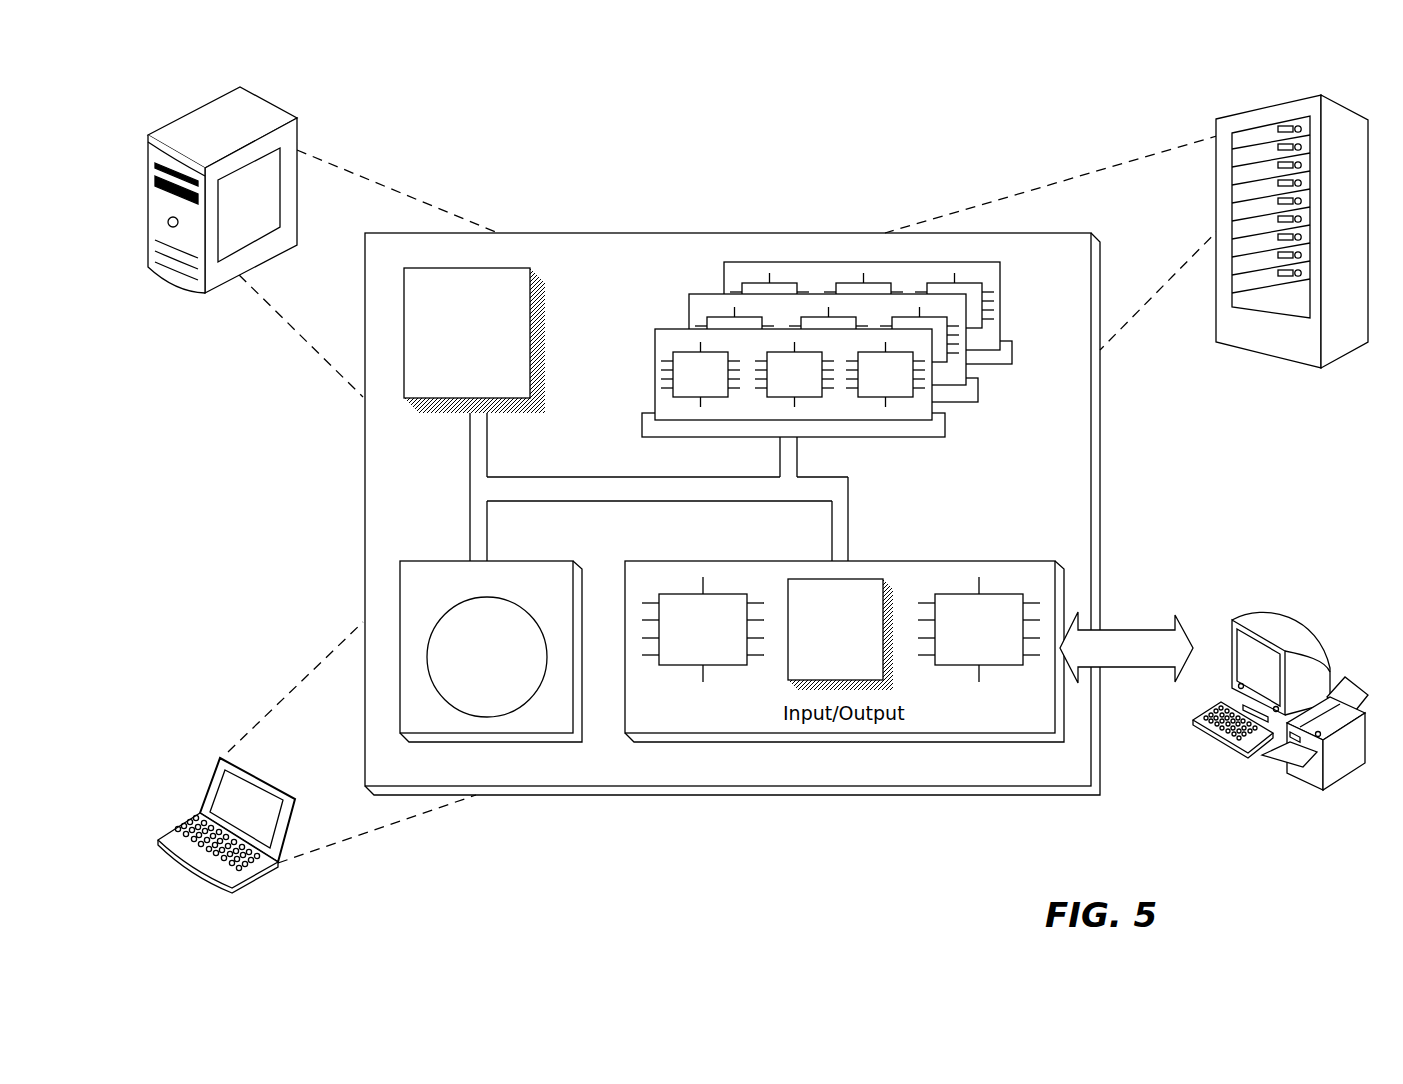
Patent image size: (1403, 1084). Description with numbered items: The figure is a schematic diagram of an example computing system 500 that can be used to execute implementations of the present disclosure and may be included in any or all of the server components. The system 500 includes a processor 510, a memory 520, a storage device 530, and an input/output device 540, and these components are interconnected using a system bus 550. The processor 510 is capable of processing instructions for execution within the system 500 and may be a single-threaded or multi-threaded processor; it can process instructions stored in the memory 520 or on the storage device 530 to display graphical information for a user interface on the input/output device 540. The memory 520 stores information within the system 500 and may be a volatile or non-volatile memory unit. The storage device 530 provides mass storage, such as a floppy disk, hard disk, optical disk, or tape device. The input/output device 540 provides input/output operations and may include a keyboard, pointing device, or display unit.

The computing system 500 is at (559, 153).
The processor 510 is at (521, 396).
The memory 520 is at (1010, 403).
The storage device 530 is at (563, 725).
The input/output device 540 is at (1232, 621).
The system bus 550 is at (655, 492).